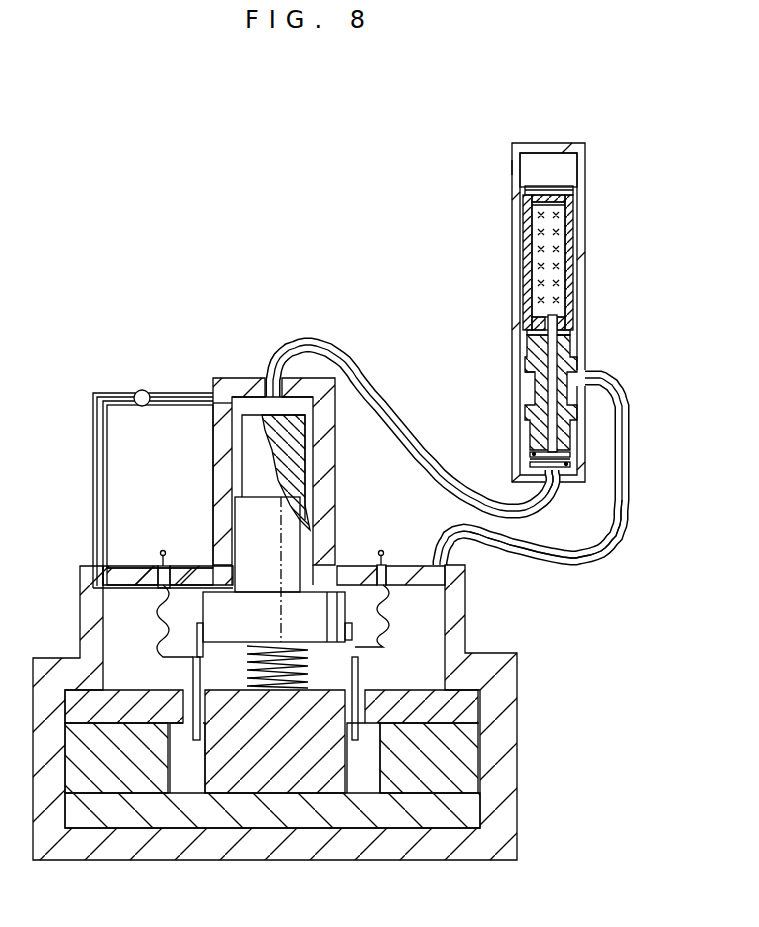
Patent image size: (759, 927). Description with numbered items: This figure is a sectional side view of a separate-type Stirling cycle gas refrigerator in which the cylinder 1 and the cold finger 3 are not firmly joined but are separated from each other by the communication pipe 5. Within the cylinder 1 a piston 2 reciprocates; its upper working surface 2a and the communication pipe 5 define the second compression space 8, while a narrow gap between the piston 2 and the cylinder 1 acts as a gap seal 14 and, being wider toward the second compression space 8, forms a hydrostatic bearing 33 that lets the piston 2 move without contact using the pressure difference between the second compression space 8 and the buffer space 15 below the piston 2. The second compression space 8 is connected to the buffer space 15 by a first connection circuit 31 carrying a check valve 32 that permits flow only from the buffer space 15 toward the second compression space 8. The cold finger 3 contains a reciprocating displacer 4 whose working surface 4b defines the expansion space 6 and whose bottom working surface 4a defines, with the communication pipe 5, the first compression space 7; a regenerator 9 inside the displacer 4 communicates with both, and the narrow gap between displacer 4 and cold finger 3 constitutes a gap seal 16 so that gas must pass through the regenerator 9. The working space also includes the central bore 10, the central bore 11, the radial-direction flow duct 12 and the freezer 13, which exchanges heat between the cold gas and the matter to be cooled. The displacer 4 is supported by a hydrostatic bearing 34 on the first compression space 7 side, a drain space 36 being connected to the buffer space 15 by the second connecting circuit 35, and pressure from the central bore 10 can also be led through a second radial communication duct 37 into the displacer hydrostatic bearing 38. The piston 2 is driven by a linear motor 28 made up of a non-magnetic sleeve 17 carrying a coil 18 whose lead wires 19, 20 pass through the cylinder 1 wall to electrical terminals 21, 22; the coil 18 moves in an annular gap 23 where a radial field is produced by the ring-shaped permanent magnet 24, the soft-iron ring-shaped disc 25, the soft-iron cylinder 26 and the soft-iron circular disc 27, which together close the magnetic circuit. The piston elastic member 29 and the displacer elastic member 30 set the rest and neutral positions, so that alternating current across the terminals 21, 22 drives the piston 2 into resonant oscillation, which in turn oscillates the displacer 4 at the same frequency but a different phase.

The cylinder 1 is at (222, 462).
The piston 2 is at (300, 531).
The upper working surface 2a is at (215, 422).
The cold finger 3 is at (580, 230).
The displacer 4 is at (569, 266).
The bottom working surface 4a is at (566, 456).
The working surface 4b is at (572, 188).
The communication pipe 5 is at (380, 364).
The expansion space 6 is at (570, 159).
The first compression space 7 is at (535, 455).
The second compression space 8 is at (322, 403).
The regenerator 9 is at (540, 252).
The central bore 10 is at (552, 434).
The central bore 11 is at (540, 210).
The radial-direction flow duct 12 is at (530, 192).
The freezer 13 is at (514, 163).
The gap seal 14 is at (326, 501).
The buffer space 15 is at (435, 620).
The gap seal 16 is at (576, 301).
The sleeve 17 is at (203, 643).
The coil 18 is at (193, 670).
The lead wire 19 is at (162, 604).
The lead wire 20 is at (395, 601).
The electrical terminal 21 is at (162, 548).
The electrical terminal 22 is at (382, 548).
The annular gap 23 is at (358, 675).
The ring-shaped permanent magnet 24 is at (443, 790).
The soft-iron ring-shaped disc 25 is at (436, 690).
The soft-iron cylinder 26 is at (338, 754).
The soft-iron circular disc 27 is at (388, 815).
The linear motor 28 is at (190, 740).
The piston elastic member 29 is at (305, 649).
The displacer elastic member 30 is at (565, 462).
The first connection circuit 31 is at (105, 470).
The check valve 32 is at (142, 389).
The hydrostatic bearing 33 is at (318, 459).
The hydrostatic bearing 34 is at (582, 432).
The second connecting circuit 35 is at (569, 552).
The drain space 36 is at (530, 391).
The second radial communication duct 37 is at (530, 332).
The displacer hydrostatic bearing 38 is at (572, 346).